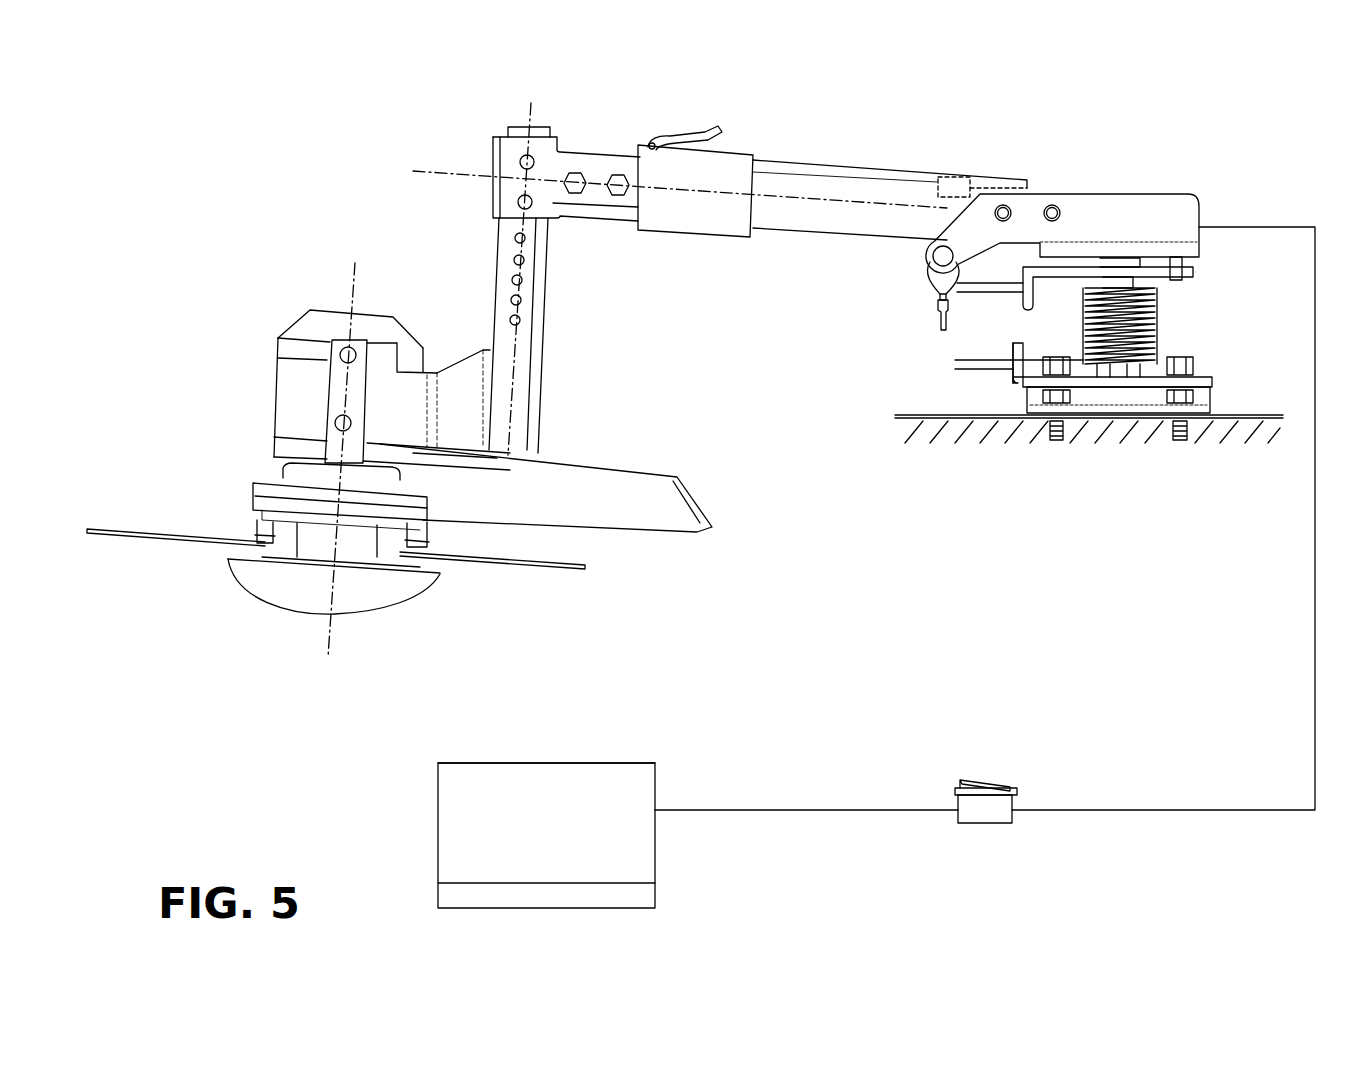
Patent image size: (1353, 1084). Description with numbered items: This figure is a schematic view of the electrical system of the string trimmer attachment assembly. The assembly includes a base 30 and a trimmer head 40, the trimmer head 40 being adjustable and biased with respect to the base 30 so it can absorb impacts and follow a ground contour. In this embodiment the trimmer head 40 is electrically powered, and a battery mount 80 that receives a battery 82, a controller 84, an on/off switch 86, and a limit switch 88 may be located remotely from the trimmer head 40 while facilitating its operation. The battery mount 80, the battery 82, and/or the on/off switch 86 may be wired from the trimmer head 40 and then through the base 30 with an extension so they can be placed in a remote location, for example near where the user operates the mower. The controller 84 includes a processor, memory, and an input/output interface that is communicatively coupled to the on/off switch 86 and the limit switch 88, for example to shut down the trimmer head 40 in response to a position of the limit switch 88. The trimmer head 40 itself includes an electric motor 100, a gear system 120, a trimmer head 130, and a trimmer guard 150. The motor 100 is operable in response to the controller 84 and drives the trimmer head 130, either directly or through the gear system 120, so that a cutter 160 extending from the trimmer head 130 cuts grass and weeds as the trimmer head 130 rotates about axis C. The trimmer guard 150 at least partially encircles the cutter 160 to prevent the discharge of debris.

The base 30 is at (1223, 173).
The trimmer head 40 is at (191, 619).
The battery mount 80 is at (650, 895).
The battery 82 is at (590, 773).
The controller 84 is at (375, 316).
The on/off switch 86 is at (990, 788).
The limit switch 88 is at (952, 178).
The electric motor 100 is at (283, 348).
The gear system 120 is at (270, 448).
The trimmer head 130 is at (498, 586).
The trimmer guard 150 is at (628, 477).
The cutter 160 is at (175, 543).
The axis C is at (327, 647).